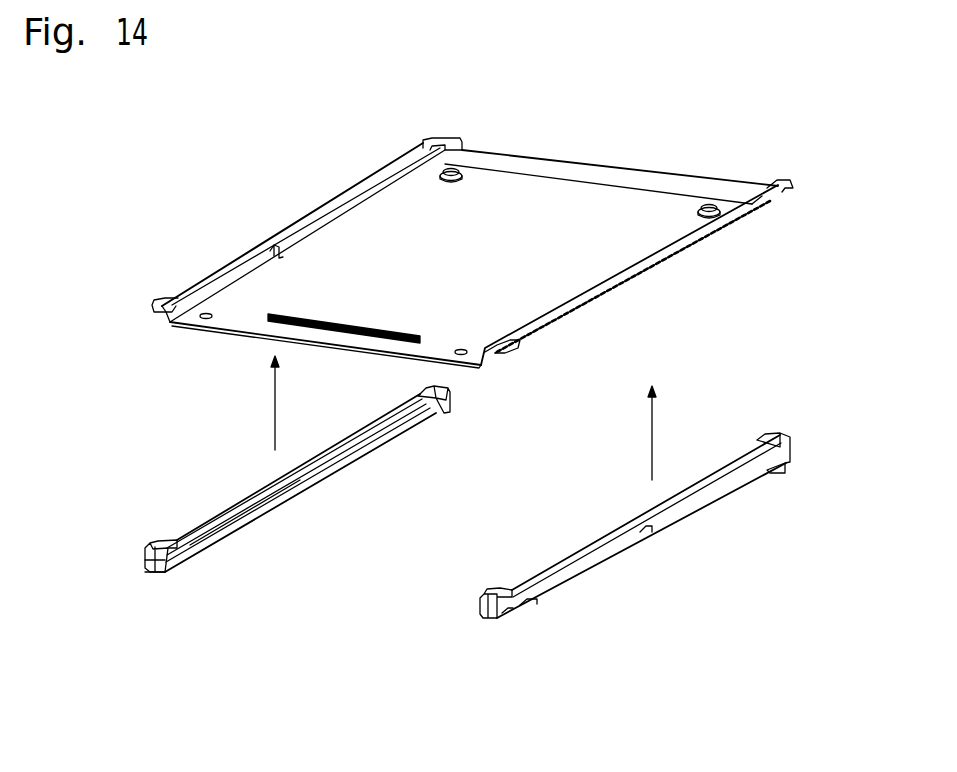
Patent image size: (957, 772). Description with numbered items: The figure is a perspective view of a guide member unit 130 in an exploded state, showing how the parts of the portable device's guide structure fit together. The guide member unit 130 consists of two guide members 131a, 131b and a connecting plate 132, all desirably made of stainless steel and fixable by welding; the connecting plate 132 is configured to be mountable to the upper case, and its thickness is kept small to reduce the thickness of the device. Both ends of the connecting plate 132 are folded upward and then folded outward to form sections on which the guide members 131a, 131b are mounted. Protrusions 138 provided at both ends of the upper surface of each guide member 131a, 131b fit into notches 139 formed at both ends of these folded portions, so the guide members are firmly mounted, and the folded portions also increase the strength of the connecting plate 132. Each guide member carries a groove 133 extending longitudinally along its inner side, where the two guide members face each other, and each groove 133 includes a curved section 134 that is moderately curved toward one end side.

The guide member unit 130 is at (385, 128).
The guide member 131a is at (263, 517).
The guide member 131b is at (593, 560).
The connecting plate 132 is at (548, 195).
The groove 133 is at (166, 566).
The curved section 134 is at (195, 540).
The protrusion 138 is at (422, 390).
The notch 139 is at (438, 143).